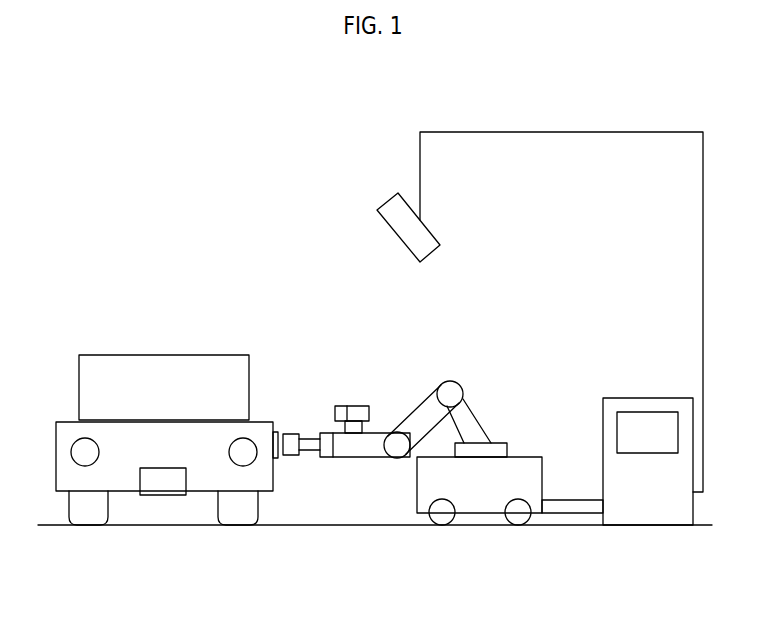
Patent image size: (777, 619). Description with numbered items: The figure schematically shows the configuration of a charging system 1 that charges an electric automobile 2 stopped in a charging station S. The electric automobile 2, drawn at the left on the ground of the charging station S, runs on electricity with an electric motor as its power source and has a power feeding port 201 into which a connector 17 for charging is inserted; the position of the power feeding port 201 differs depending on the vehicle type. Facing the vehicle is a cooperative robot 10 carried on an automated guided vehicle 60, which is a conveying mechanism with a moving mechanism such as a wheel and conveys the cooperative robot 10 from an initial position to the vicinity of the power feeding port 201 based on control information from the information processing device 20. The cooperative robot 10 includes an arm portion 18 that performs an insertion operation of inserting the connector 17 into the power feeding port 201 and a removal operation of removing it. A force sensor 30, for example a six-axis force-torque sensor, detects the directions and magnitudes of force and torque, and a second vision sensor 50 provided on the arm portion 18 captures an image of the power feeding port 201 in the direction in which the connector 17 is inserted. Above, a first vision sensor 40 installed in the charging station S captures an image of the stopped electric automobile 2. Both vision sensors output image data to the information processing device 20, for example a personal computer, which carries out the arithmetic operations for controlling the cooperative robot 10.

The charging system 1 is at (377, 112).
The charging station S is at (60, 548).
The electric automobile 2 is at (165, 355).
The power feeding port 201 is at (282, 431).
The connector 17 is at (294, 433).
The force sensor 30 is at (327, 458).
The second vision sensor 50 is at (357, 408).
The arm portion 18 is at (412, 410).
The cooperative robot 10 is at (450, 388).
The automated guided vehicle 60 is at (520, 465).
The information processing device 20 is at (642, 422).
The first vision sensor 40 is at (407, 233).